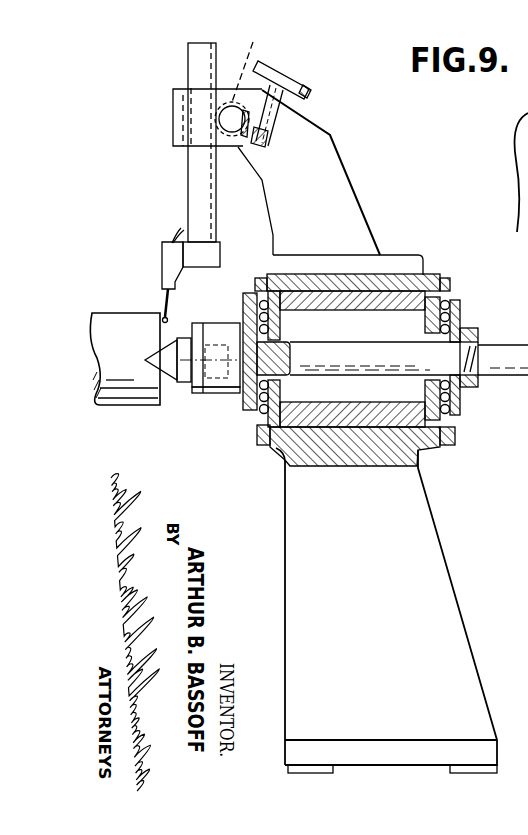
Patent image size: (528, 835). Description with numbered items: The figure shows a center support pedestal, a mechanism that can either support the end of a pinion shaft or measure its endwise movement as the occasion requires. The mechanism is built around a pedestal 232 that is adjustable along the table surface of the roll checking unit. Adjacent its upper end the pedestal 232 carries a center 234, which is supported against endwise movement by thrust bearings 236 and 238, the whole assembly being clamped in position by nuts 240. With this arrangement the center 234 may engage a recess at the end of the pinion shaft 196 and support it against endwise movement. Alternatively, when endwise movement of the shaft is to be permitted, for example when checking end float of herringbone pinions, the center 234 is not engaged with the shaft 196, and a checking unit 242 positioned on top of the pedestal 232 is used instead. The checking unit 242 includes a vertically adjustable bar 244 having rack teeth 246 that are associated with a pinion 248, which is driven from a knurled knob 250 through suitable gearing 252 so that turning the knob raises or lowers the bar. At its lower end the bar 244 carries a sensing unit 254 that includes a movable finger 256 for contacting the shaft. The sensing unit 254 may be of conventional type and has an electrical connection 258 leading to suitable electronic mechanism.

The pinion shaft 196 is at (133, 406).
The pedestal 232 is at (459, 602).
The center 234 is at (200, 394).
The thrust bearing 236 is at (250, 303).
The thrust bearing 238 is at (462, 309).
The nuts 240 is at (443, 276).
The checking unit 242 is at (340, 153).
The vertically adjustable bar 244 is at (188, 174).
The rack teeth 246 is at (216, 157).
The pinion 248 is at (255, 60).
The knurled knob 250 is at (305, 88).
The gearing 252 is at (259, 146).
The sensing unit 254 is at (164, 252).
The movable finger 256 is at (168, 313).
The electrical connection 258 is at (170, 241).